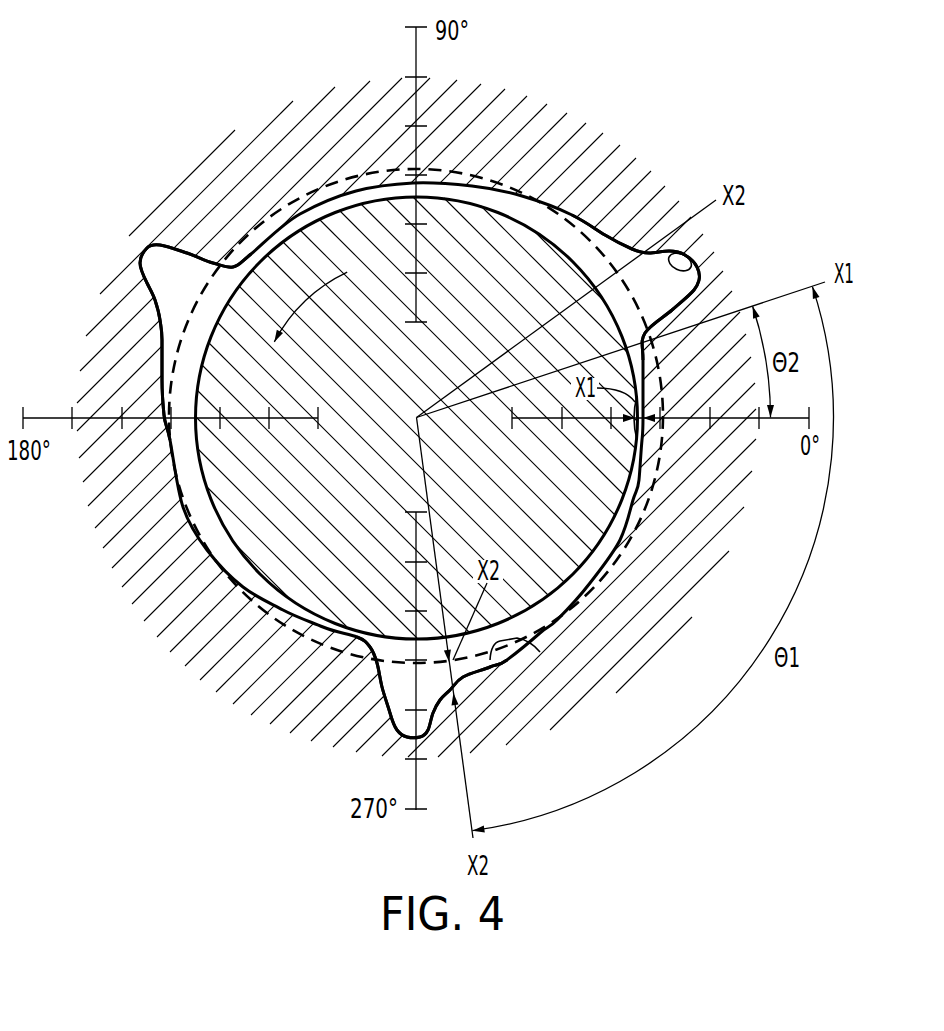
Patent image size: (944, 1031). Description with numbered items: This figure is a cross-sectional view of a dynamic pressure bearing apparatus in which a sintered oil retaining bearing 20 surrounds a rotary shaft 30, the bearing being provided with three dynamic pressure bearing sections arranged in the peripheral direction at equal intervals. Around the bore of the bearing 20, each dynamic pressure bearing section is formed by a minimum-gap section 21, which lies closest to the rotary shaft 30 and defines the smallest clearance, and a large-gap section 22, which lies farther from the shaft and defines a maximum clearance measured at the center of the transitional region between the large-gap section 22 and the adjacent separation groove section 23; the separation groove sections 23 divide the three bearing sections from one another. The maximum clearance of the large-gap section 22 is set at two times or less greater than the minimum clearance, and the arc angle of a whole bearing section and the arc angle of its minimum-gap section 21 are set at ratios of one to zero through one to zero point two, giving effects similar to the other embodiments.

The sintered oil retaining bearing 20 is at (521, 164).
The minimum-gap section 21 is at (641, 428).
The large-gap section 22 is at (528, 643).
The separation groove section 23 is at (695, 255).
The rotary shaft 30 is at (519, 243).